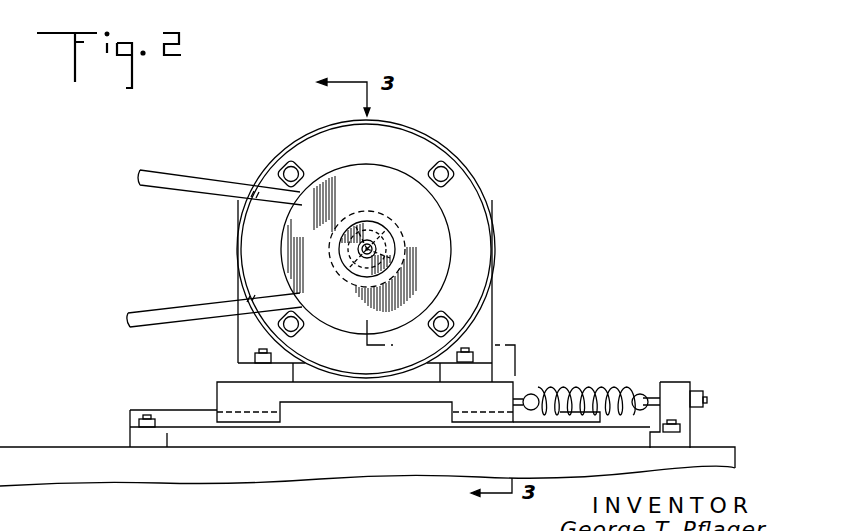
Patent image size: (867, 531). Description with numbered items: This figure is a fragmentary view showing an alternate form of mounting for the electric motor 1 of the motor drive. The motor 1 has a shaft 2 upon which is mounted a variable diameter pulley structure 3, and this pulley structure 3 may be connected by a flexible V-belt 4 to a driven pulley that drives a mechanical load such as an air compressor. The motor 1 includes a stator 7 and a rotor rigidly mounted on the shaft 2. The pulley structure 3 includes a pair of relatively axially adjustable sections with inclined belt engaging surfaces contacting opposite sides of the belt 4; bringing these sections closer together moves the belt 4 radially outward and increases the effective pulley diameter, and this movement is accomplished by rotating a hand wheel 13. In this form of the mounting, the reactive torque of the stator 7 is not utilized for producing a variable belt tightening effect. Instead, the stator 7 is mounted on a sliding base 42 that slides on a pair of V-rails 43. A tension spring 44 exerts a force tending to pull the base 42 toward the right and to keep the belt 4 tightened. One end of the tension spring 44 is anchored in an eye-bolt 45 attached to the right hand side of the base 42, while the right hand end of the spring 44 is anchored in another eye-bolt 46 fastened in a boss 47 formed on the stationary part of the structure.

The electric motor 1 is at (471, 268).
The shaft 2 is at (378, 241).
The variable diameter pulley structure 3 is at (340, 172).
The flexible V-belt 4 is at (172, 174).
The stator 7 is at (478, 222).
The hand wheel 13 is at (372, 211).
The sliding base 42 is at (512, 383).
The V-rails 43 is at (197, 424).
The tension spring 44 is at (590, 386).
The eye-bolt 45 is at (522, 410).
The eye-bolt 46 is at (654, 392).
The boss 47 is at (690, 380).